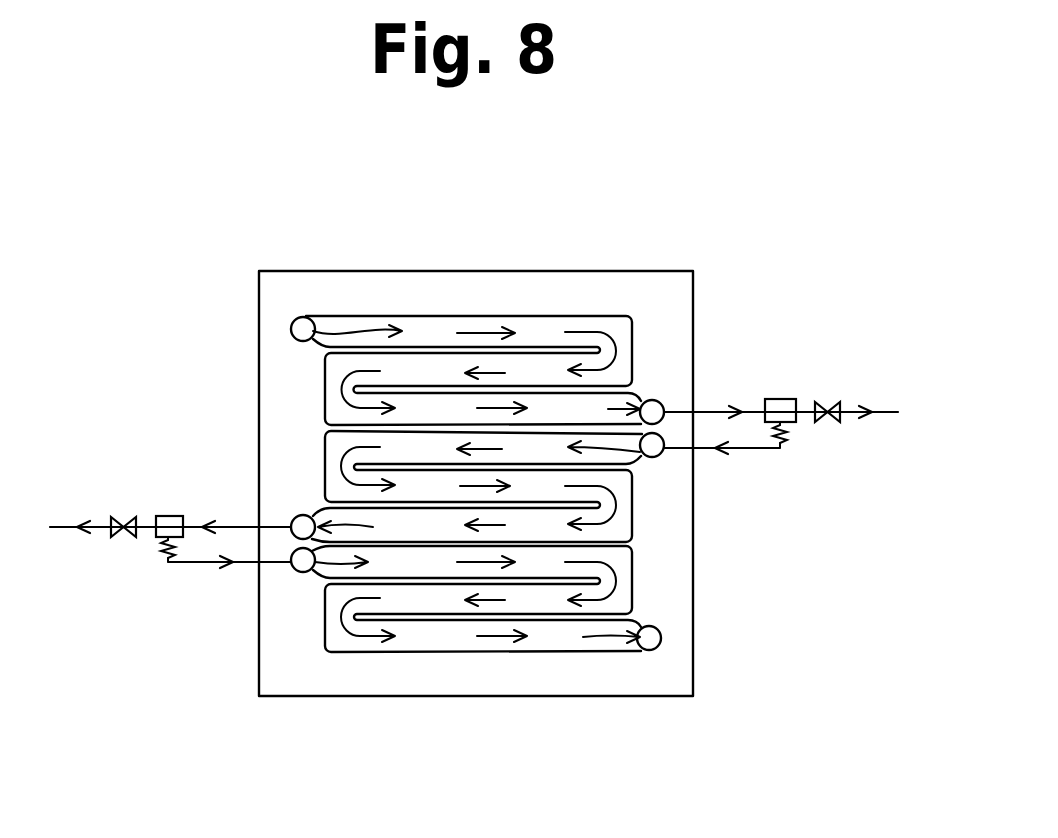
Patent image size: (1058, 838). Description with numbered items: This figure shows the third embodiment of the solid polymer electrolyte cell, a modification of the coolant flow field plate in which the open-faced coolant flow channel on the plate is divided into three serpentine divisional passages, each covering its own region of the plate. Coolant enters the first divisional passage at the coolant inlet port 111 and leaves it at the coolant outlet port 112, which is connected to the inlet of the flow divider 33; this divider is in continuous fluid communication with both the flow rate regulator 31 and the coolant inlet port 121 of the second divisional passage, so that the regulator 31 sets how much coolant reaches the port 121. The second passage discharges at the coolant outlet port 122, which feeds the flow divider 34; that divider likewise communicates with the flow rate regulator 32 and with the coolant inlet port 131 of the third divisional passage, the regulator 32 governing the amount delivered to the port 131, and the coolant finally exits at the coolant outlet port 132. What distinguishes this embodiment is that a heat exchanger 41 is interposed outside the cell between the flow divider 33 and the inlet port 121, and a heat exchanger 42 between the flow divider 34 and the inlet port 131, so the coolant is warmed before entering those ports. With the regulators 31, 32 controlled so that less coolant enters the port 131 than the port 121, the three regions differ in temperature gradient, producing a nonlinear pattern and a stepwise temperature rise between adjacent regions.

The coolant inlet port 111 is at (300, 317).
The coolant outlet port 112 is at (657, 403).
The coolant inlet port 121 is at (660, 455).
The coolant outlet port 122 is at (295, 518).
The coolant inlet port 131 is at (296, 568).
The coolant outlet port 132 is at (653, 650).
The flow rate regulator 31 is at (825, 441).
The flow rate regulator 32 is at (106, 553).
The flow divider 33 is at (787, 399).
The flow divider 34 is at (167, 516).
The heat exchanger 41 is at (785, 442).
The heat exchanger 42 is at (165, 553).